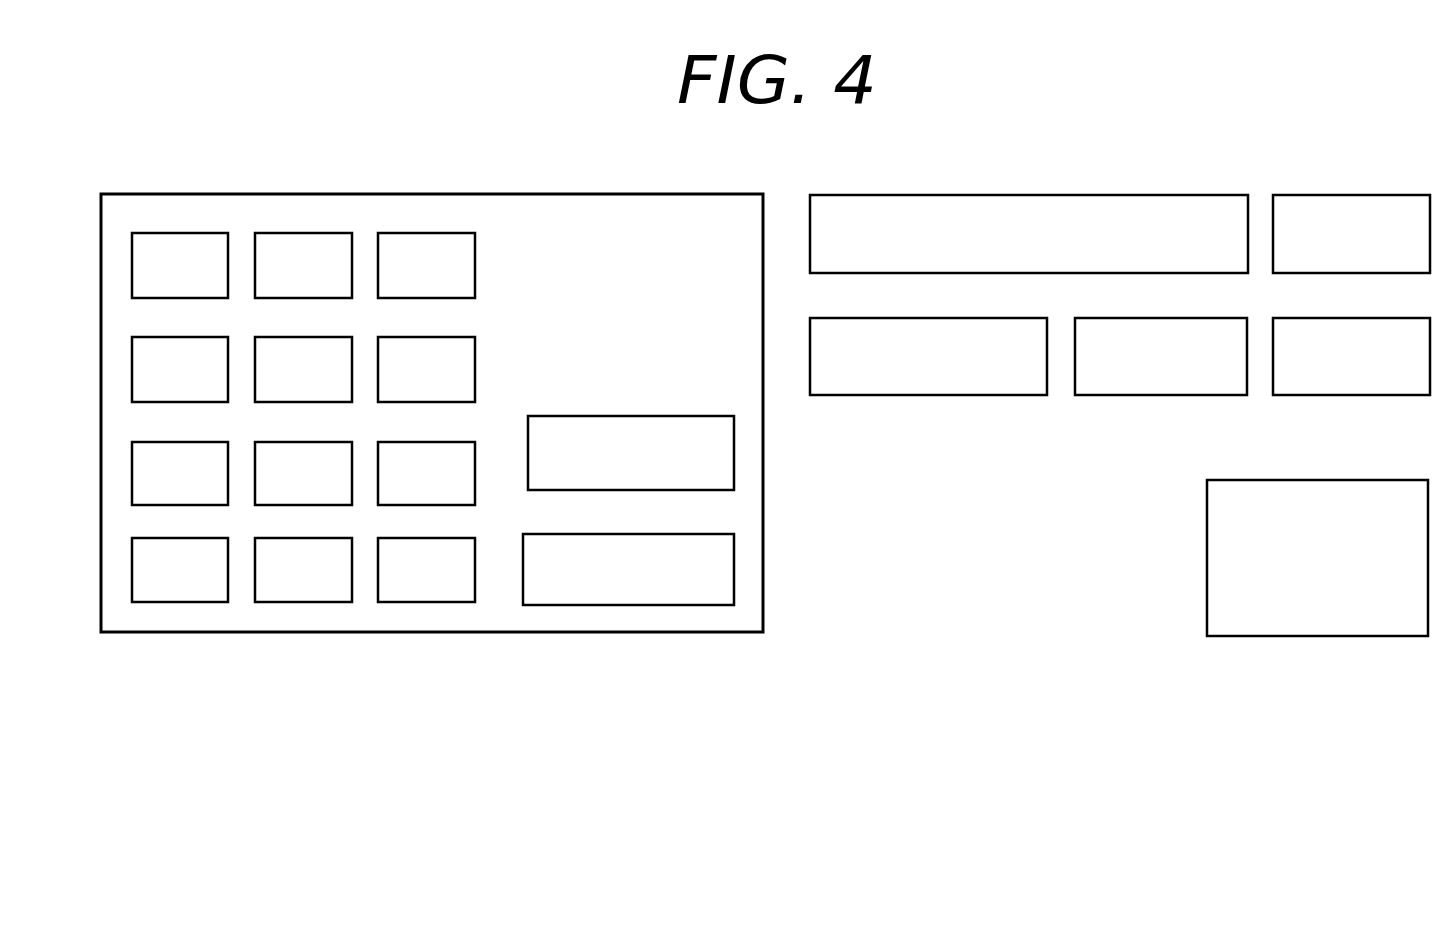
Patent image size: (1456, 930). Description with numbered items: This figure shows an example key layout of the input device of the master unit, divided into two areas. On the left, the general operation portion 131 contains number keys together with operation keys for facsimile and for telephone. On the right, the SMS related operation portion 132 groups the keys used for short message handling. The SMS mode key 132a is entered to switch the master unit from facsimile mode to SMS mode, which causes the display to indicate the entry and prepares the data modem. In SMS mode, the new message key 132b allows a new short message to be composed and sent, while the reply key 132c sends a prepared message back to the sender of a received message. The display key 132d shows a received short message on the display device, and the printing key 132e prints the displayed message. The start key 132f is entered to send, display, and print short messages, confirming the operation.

The general operation portion 131 is at (620, 622).
The SMS related operation portion 132 is at (1120, 468).
The SMS mode key 132a is at (1120, 213).
The new message key 132b is at (897, 382).
The reply key 132c is at (1100, 380).
The display key 132d is at (1335, 215).
The printing key 132e is at (1320, 380).
The start key 132f is at (1222, 597).